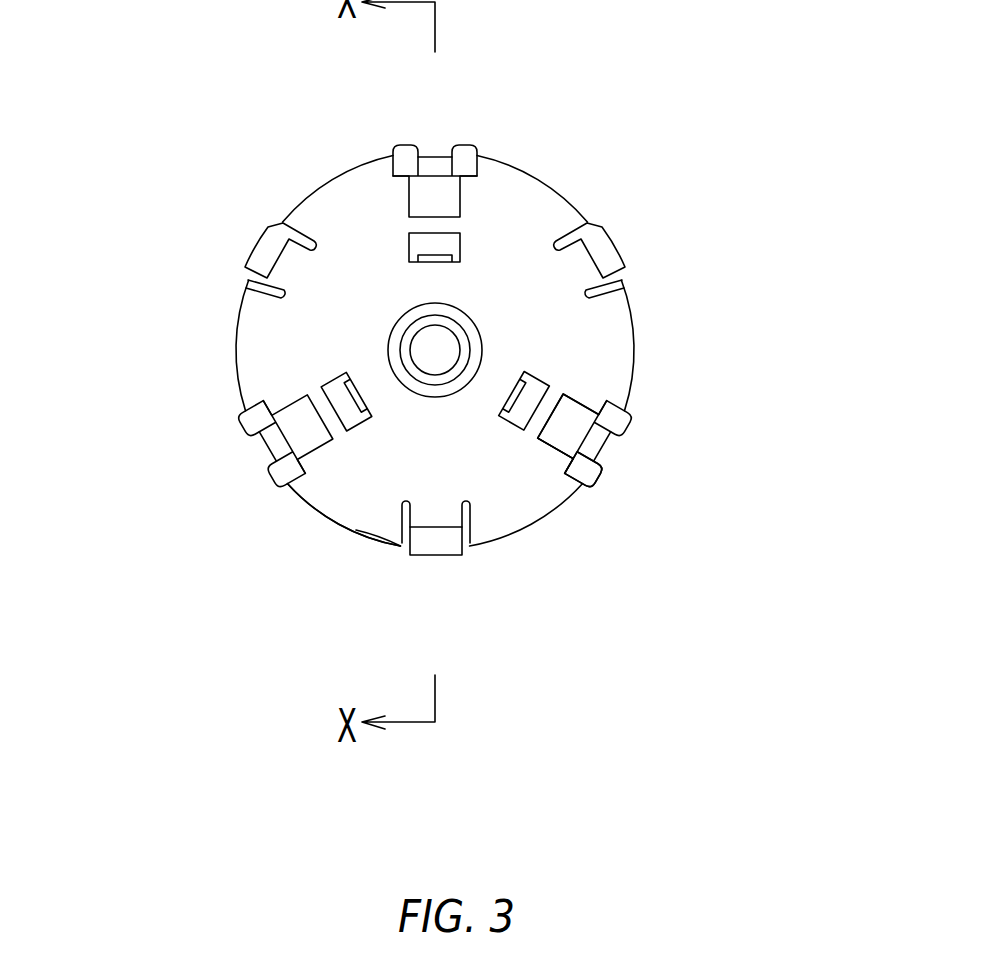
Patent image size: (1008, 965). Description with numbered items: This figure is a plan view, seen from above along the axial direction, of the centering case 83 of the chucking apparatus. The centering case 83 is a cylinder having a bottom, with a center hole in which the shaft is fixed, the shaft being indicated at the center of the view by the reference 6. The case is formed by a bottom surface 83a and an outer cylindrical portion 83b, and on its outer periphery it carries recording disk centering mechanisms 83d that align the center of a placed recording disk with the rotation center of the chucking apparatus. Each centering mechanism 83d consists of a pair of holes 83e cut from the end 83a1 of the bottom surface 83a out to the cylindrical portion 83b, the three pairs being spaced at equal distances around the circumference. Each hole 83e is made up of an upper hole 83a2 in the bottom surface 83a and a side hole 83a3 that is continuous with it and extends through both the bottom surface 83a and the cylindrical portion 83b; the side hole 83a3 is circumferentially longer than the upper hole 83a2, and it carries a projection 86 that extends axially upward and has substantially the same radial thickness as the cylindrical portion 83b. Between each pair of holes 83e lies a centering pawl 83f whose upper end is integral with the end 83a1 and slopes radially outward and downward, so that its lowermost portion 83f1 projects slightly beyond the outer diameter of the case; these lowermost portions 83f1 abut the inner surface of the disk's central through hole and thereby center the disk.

The shaft 6 is at (432, 349).
The centering case 83 is at (203, 327).
The bottom surface 83a is at (385, 463).
The end of the bottom surface 83a1 is at (383, 525).
The upper hole 83a2 is at (570, 420).
The side hole 83a3 is at (588, 473).
The outer cylindrical portion 83b is at (325, 520).
The recording disk centering mechanism 83d is at (655, 256).
The hole 83e is at (553, 462).
The centering pawl 83f is at (437, 530).
The lowermost portion of the centering pawl 83f1 is at (457, 555).
The projection 86 is at (597, 442).